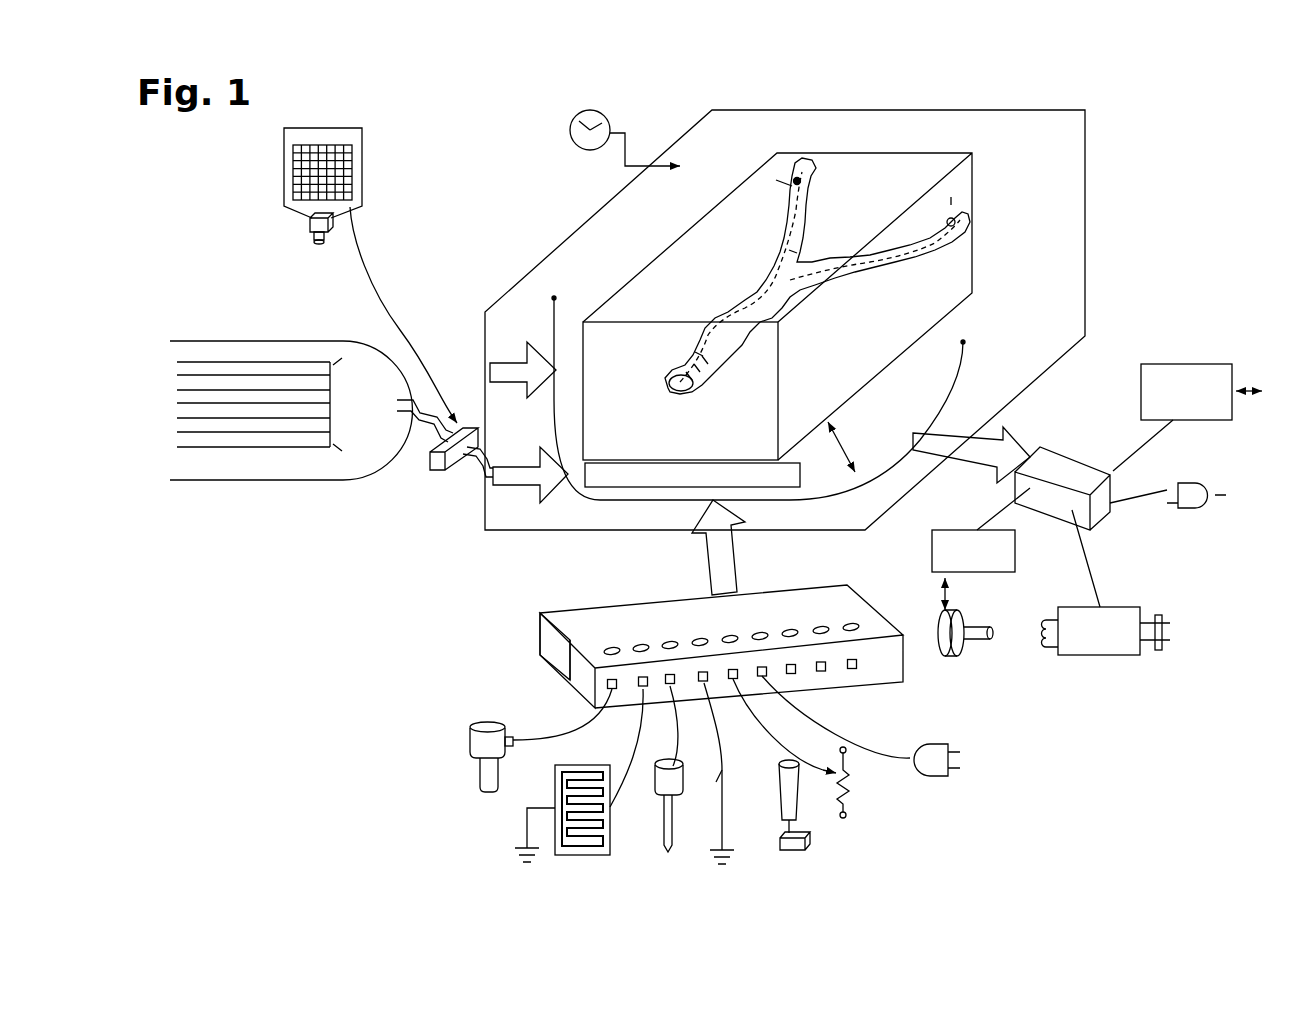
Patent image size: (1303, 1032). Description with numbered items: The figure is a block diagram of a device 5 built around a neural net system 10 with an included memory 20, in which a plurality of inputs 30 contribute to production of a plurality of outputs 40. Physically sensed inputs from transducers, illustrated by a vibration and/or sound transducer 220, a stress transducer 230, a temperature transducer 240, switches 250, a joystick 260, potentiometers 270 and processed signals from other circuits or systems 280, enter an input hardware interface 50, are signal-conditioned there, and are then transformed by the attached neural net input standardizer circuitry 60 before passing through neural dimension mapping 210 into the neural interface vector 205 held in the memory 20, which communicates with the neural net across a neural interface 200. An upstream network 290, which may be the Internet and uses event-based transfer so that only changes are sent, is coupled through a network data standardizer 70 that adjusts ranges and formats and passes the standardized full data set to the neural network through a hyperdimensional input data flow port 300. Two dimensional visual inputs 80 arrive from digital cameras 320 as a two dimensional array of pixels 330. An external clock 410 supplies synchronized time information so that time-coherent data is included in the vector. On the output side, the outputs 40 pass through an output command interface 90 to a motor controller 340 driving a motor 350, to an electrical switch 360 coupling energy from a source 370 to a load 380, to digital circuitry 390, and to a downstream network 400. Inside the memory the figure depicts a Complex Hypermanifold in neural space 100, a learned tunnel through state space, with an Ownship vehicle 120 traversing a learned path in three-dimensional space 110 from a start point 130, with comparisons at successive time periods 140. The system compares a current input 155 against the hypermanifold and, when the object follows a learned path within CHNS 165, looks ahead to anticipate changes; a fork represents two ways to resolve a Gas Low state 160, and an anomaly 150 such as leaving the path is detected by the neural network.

The device 5 is at (1125, 755).
The neural net system 10 is at (623, 182).
The memory 20 is at (675, 242).
The inputs 30 is at (516, 505).
The outputs 40 is at (1008, 428).
The input hardware interface 50 is at (577, 668).
The neural net input standardizer circuitry 60 is at (548, 642).
The network data standardizer 70 is at (455, 423).
The visual inputs 80 is at (362, 230).
The output command interface 90 is at (1081, 456).
The Complex Hypermanifold in neural space 100 is at (808, 195).
The path in three-dimensional space 110 is at (850, 274).
The Ownship vehicle 120 is at (699, 348).
The start point 130 is at (677, 380).
The time periods 140 is at (699, 369).
The anomaly 150 is at (955, 212).
The current input 155 is at (792, 208).
The Gas Low state 160 is at (793, 248).
The learned path within CHNS 165 is at (785, 182).
The neural interface 200 is at (843, 436).
The neural interface vector 205 is at (805, 481).
The neural dimension mapping 210 is at (548, 320).
The vibration and/or sound transducer 220 is at (467, 721).
The stress transducer 230 is at (585, 885).
The temperature transducer 240 is at (688, 877).
The switches 250 is at (758, 874).
The joystick 260 is at (832, 873).
The potentiometers 270 is at (887, 832).
The processed signals from other circuits or systems 280 is at (967, 820).
The upstream network 290 is at (274, 483).
The hyperdimensional input data flow port 300 is at (475, 466).
The digital cameras 320 is at (305, 227).
The two dimensional array of pixels 330 is at (393, 167).
The motor controller 340 is at (972, 558).
The motor 350 is at (965, 636).
The electrical switch 360 is at (1101, 621).
The source 370 is at (1185, 626).
The load 380 is at (1038, 627).
The digital circuitry 390 is at (1196, 498).
The downstream network 400 is at (1201, 381).
The external clock 410 is at (570, 115).